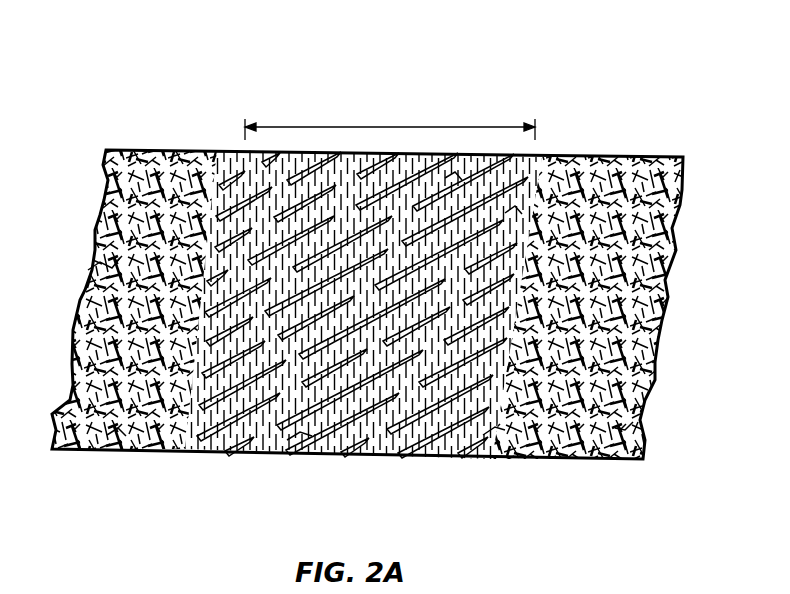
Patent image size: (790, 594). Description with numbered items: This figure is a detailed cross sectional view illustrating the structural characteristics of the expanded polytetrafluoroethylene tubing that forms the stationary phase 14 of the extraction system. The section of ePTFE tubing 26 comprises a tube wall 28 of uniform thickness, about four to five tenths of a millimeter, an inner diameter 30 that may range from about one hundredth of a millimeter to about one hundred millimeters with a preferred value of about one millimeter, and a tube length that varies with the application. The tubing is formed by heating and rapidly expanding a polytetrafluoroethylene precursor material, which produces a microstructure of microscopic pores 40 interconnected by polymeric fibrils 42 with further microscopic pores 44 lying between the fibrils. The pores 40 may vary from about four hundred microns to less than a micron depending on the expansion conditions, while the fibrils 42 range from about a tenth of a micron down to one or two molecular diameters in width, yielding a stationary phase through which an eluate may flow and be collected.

The stationary phase 14 is at (250, 76).
The ePTFE tubing 26 is at (457, 70).
The tube wall 28 is at (128, 133).
The inner diameter 30 is at (387, 125).
The microscopic pores 40 is at (172, 157).
The polymeric fibrils 42 is at (88, 270).
The microscopic pores 44 is at (445, 178).